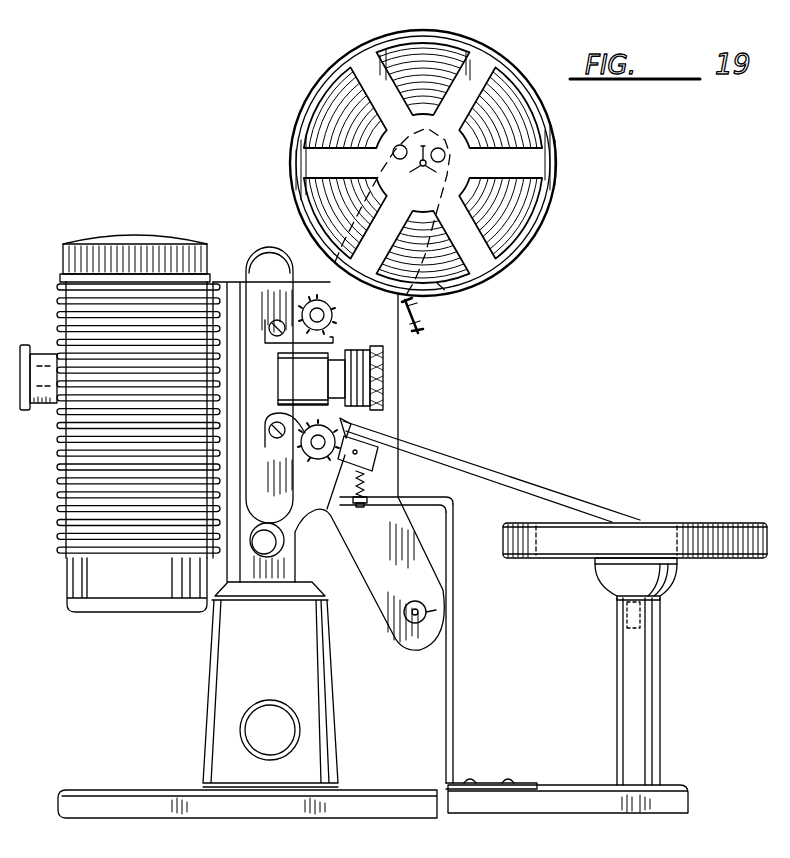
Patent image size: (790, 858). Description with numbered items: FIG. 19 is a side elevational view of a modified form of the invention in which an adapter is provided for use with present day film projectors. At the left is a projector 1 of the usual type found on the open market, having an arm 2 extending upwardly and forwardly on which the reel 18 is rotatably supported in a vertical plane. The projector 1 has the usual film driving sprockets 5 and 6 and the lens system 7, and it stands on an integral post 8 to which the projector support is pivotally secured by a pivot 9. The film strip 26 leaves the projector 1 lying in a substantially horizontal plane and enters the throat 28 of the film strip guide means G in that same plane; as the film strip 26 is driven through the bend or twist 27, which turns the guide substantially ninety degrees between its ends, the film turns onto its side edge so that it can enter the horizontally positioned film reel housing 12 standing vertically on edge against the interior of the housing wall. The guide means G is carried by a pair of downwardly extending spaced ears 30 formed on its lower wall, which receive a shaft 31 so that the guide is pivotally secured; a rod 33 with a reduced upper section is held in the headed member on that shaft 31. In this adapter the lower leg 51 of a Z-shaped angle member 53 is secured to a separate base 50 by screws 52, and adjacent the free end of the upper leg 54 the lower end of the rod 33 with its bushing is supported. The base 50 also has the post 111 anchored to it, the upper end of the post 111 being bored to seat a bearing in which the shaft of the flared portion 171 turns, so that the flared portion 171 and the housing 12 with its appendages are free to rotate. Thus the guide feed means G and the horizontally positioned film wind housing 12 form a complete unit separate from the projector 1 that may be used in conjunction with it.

The projector 1 is at (202, 232).
The arm 2 is at (446, 294).
The film driving sprocket 5 is at (318, 300).
The film driving sprocket 6 is at (316, 461).
The lens system 7 is at (380, 374).
The post 8 is at (250, 674).
The pivot 9 is at (272, 548).
The film reel housing 12 is at (741, 522).
The reel 18 is at (509, 53).
The film strip 26 is at (291, 262).
The bend or twist 27 is at (466, 467).
The throat 28 is at (346, 424).
The ears 30 is at (376, 465).
The shaft 31 is at (333, 514).
The rod 33 is at (372, 478).
The base 50 is at (583, 800).
The lower leg 51 is at (492, 780).
The screws 52 is at (470, 779).
The Z-shaped angle member 53 is at (457, 708).
The upper leg 54 is at (390, 505).
The post 111 is at (650, 663).
The flared portion 171 is at (652, 590).
The film strip guide means G is at (567, 495).